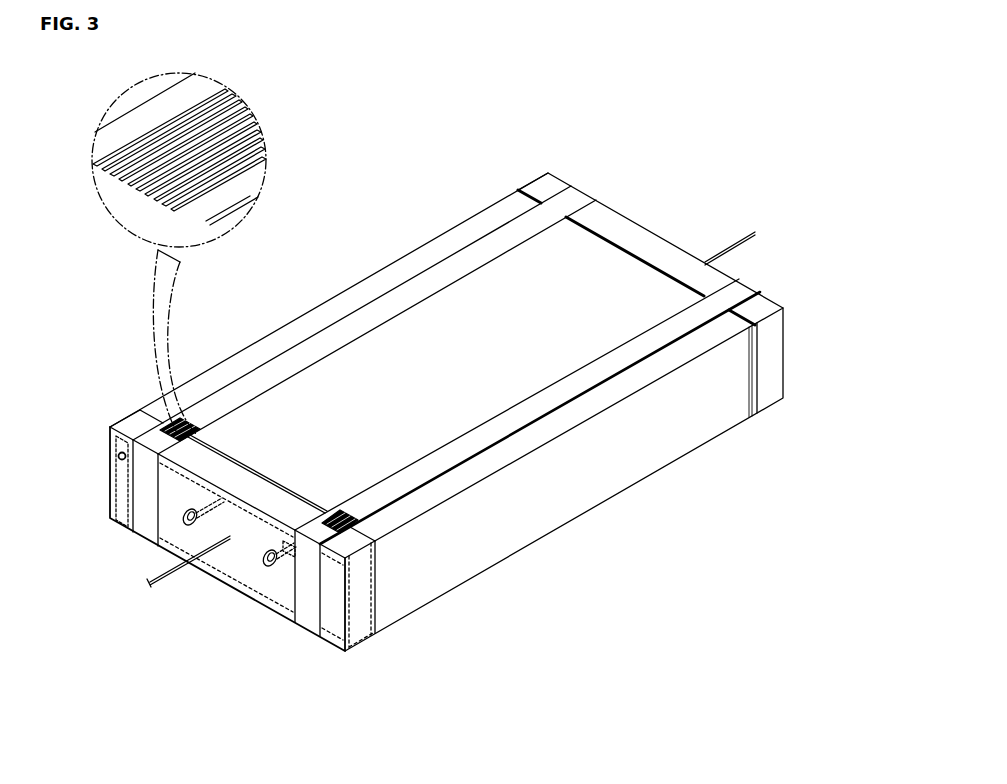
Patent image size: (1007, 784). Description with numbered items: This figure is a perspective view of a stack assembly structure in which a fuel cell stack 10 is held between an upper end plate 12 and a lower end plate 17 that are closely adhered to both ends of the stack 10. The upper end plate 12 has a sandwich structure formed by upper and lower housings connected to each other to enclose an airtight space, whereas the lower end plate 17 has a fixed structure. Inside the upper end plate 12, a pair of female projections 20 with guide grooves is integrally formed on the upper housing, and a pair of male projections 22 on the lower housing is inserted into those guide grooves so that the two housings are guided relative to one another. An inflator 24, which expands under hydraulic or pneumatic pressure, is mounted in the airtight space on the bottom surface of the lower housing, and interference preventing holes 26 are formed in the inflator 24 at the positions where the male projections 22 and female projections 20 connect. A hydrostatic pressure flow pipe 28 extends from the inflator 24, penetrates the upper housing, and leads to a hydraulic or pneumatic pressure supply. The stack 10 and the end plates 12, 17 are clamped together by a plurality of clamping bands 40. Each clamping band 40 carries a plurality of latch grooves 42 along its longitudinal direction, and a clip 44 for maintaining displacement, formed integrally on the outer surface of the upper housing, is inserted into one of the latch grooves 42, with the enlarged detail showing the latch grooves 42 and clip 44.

The fuel cell stack 10 is at (413, 389).
The upper end plate 12 is at (324, 643).
The lower end plate 17 is at (633, 233).
The female projections 20 is at (292, 572).
The male projections 22 is at (289, 540).
The inflator 24 is at (124, 453).
The interference preventing holes 26 is at (264, 554).
The hydrostatic pressure flow pipe 28 is at (162, 574).
The clamping band 40 is at (295, 362).
The latch grooves 42 is at (222, 167).
The clip 44 is at (130, 146).